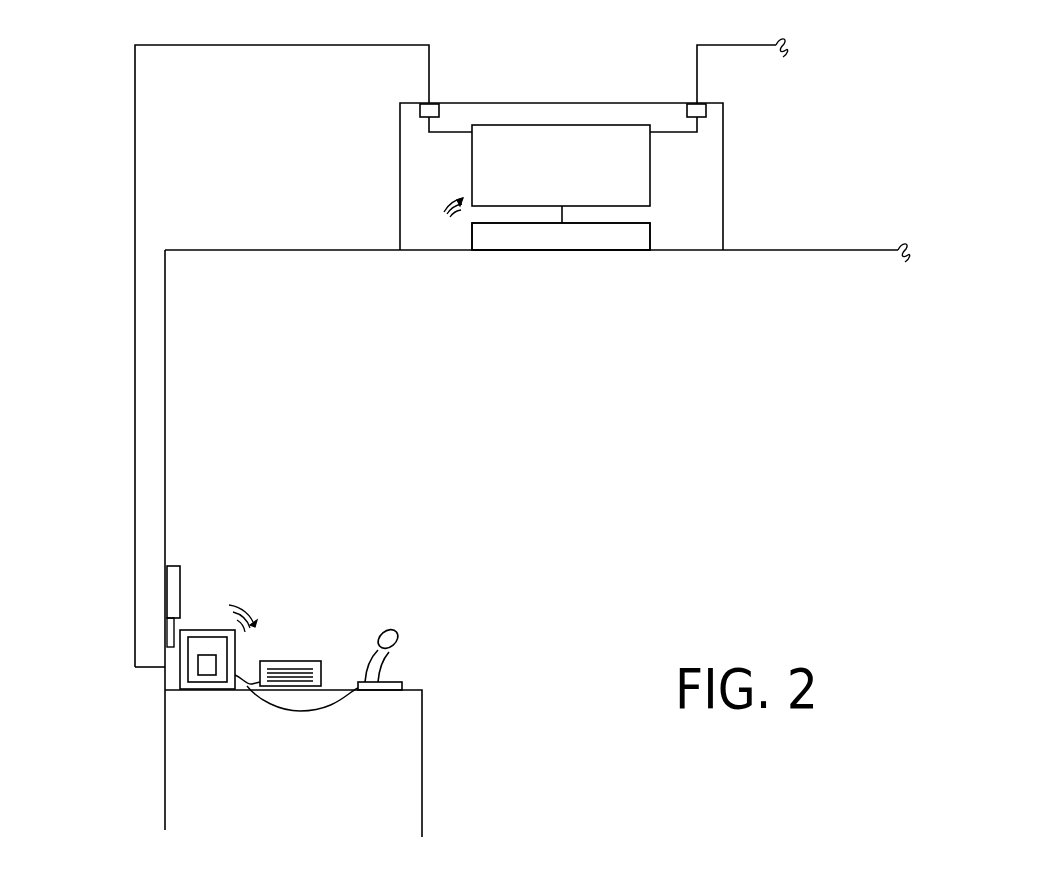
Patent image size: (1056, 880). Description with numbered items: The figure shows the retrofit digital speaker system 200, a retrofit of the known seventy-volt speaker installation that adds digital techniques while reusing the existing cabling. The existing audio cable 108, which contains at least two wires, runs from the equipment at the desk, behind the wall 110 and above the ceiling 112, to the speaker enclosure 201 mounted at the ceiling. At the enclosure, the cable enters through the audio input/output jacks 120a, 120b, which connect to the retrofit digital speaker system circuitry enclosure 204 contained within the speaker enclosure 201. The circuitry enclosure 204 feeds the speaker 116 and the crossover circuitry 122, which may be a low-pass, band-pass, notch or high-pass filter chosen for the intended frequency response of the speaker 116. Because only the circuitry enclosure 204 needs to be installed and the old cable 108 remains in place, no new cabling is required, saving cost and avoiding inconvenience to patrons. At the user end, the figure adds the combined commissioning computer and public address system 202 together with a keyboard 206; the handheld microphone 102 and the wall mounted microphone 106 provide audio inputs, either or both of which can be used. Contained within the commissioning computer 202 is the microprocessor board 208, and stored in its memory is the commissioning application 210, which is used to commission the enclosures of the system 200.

The retrofit digital speaker system 200 is at (741, 512).
The audio cable 108 is at (697, 62).
The wall 110 is at (165, 415).
The ceiling 112 is at (202, 250).
The retrofit digital speaker system speaker enclosure 201 is at (400, 213).
The audio input/output jack 120a is at (420, 108).
The audio input/output jack 120b is at (706, 110).
The retrofit digital speaker system circuitry enclosure 204 is at (572, 177).
The speaker 116 is at (550, 249).
The crossover circuitry 122 is at (602, 249).
The commissioning computer and public address system 202 is at (179, 673).
The wall mounted microphone 106 is at (180, 585).
The microprocessor board with memory 208 is at (200, 637).
The commissioning software application 210 is at (215, 677).
The keyboard 206 is at (268, 661).
The handheld microphone 102 is at (381, 672).